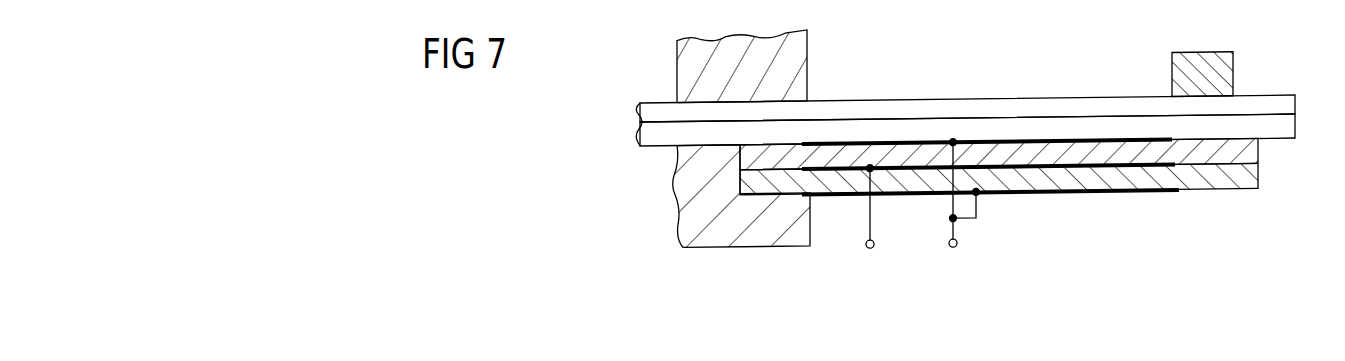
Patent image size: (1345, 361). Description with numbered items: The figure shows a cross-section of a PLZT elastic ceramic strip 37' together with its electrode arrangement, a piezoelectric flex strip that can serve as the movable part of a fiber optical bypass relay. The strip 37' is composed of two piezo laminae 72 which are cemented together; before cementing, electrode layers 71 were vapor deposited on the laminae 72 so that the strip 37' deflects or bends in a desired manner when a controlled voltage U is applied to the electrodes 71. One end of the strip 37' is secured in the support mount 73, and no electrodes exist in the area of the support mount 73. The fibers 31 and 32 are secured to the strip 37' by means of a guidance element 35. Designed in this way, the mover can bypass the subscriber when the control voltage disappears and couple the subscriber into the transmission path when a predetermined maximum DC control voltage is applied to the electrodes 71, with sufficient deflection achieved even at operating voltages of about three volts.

The support mount 73 is at (800, 59).
The guidance element 35 is at (1233, 69).
The fiber 32 is at (1295, 110).
The fiber 31 is at (1295, 133).
The PLZT elastic ceramic strip 37' is at (1022, 166).
The electrode layers 71 is at (1036, 147).
The piezo laminae 72 is at (1100, 163).
The controlled voltage U is at (911, 242).